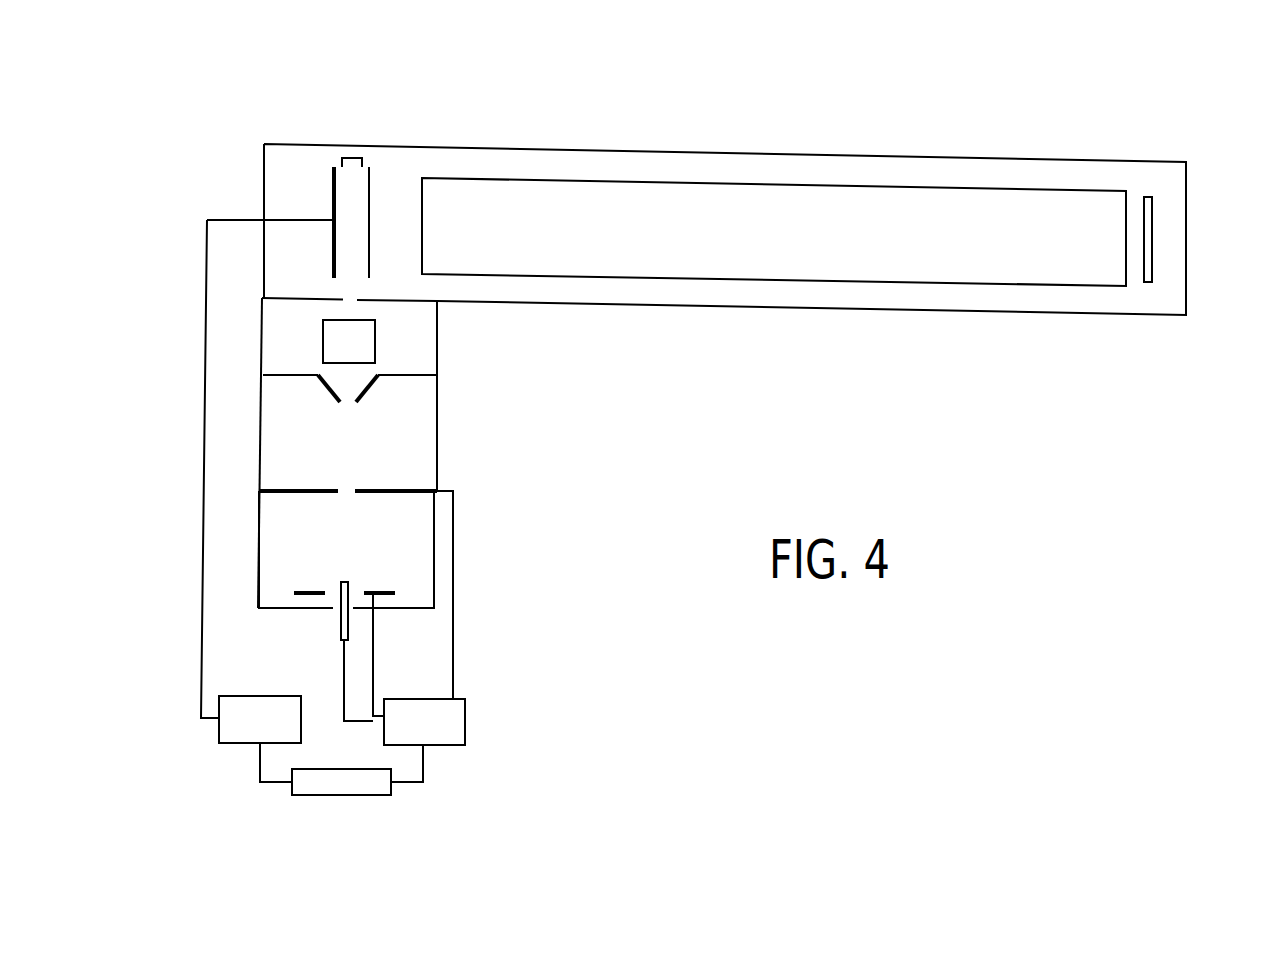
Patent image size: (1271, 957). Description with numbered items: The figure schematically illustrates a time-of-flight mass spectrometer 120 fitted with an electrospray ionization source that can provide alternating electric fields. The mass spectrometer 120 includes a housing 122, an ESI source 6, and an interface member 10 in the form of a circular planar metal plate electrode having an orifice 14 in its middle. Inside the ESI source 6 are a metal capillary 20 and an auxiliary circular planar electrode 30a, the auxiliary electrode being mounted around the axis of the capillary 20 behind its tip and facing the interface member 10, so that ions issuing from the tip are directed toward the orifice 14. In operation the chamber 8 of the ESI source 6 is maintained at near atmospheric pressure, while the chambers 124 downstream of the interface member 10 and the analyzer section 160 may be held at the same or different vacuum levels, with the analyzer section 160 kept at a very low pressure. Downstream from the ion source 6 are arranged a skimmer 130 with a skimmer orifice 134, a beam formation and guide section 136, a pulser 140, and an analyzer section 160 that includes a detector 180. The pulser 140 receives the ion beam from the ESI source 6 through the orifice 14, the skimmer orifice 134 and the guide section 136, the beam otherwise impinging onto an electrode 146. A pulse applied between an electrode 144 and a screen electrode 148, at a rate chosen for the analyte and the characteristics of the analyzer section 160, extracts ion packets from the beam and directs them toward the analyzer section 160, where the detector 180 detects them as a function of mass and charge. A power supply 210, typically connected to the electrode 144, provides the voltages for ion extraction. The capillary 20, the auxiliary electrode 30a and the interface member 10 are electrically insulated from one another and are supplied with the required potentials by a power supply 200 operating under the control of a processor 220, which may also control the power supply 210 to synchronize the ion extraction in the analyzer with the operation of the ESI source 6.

The ESI source 6 is at (382, 606).
The chamber 8 is at (392, 556).
The interface member 10 is at (385, 491).
The orifice 14 is at (343, 490).
The metal capillary 20 is at (348, 628).
The auxiliary circular planar electrode 30a is at (312, 590).
The mass spectrometer 120 is at (326, 396).
The housing 122 is at (263, 290).
The chambers 124 is at (313, 476).
The skimmer 130 is at (331, 393).
The skimmer orifice 134 is at (340, 402).
The beam formation and guide section 136 is at (367, 353).
The pulser 140 is at (305, 185).
The electrode 144 is at (333, 197).
The electrode 146 is at (318, 173).
The screen electrode 148 is at (370, 183).
The analyzer section 160 is at (1008, 186).
The detector 180 is at (1152, 237).
The power supply 200 is at (442, 735).
The power supply 210 is at (278, 731).
The processor 220 is at (362, 795).